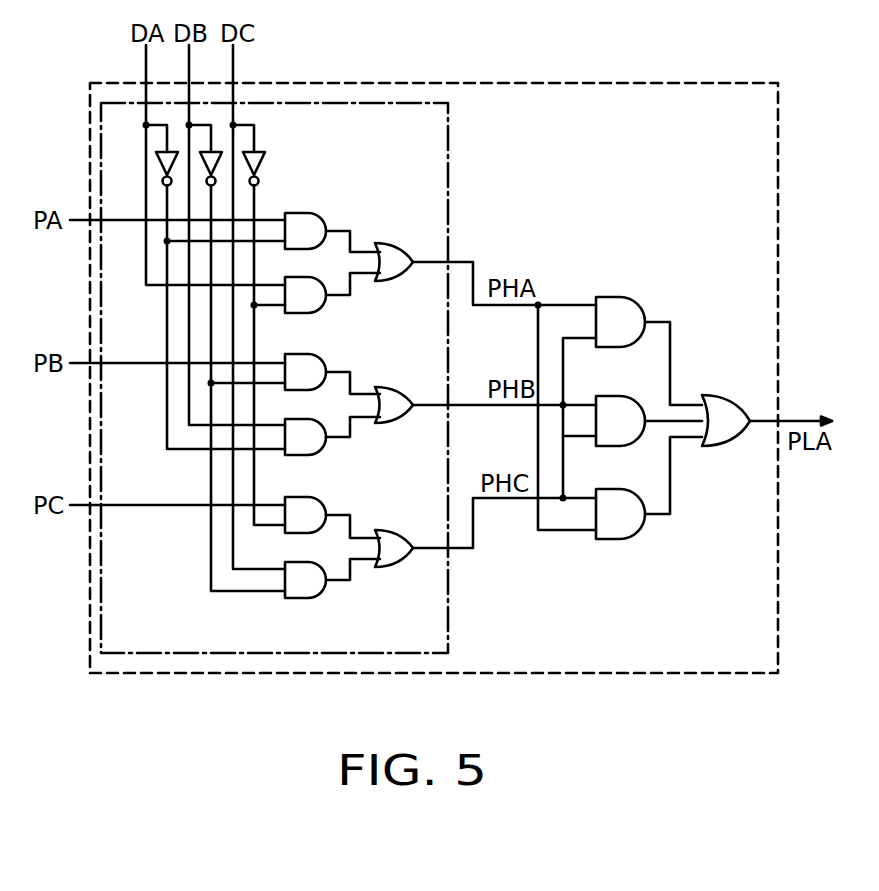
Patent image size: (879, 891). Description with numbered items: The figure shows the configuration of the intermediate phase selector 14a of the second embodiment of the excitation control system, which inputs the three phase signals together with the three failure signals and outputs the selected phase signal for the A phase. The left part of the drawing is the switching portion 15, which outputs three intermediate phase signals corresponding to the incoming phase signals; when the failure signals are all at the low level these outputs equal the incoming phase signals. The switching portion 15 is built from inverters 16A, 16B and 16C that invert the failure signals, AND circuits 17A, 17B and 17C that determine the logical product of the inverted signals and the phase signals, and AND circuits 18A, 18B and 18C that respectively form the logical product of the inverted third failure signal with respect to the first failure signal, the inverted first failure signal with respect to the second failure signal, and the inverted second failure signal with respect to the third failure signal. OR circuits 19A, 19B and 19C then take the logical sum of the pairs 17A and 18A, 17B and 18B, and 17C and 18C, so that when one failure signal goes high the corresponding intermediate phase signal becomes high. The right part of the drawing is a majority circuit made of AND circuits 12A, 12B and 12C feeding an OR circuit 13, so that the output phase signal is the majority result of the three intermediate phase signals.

The AND circuit 12A is at (622, 297).
The AND circuit 12B is at (622, 396).
The AND circuit 12C is at (620, 539).
The OR circuit 13 is at (725, 446).
The intermediate phase selector 14a is at (632, 673).
The switching portion 15 is at (268, 653).
The inverter 16A is at (158, 164).
The inverter 16B is at (219, 153).
The inverter 16C is at (261, 166).
The AND circuit 17A is at (312, 213).
The AND circuit 17B is at (312, 354).
The AND circuit 17C is at (312, 497).
The AND circuit 18A is at (322, 305).
The AND circuit 18B is at (323, 448).
The AND circuit 18C is at (331, 584).
The OR circuit 19A is at (388, 243).
The OR circuit 19B is at (388, 387).
The OR circuit 19C is at (388, 530).